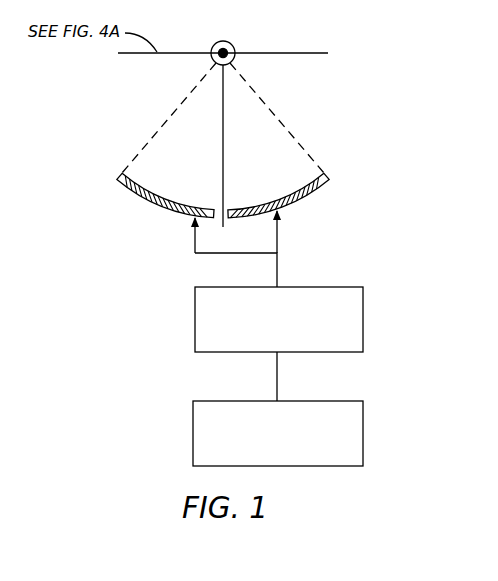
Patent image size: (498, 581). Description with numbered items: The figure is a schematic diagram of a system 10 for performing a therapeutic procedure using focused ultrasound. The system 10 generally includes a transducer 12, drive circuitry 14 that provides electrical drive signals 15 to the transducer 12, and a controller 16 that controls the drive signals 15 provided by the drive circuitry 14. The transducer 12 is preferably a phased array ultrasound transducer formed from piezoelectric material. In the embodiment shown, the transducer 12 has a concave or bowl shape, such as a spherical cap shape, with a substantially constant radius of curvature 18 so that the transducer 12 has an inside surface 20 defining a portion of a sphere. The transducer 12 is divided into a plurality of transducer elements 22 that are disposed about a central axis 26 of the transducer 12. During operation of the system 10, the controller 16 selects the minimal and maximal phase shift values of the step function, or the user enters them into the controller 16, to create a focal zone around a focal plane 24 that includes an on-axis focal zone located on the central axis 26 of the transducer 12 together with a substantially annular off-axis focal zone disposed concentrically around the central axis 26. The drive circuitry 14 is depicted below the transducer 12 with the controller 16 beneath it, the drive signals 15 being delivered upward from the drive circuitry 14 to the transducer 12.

The system 10 is at (250, 127).
The transducer 12 is at (154, 207).
The drive circuitry 14 is at (364, 312).
The drive signals 15 is at (278, 234).
The controller 16 is at (364, 417).
The radius of curvature 18 is at (268, 110).
The inside surface 20 is at (303, 190).
The transducer elements 22 is at (231, 43).
The focal plane 24 is at (307, 52).
The central axis 26 is at (222, 117).